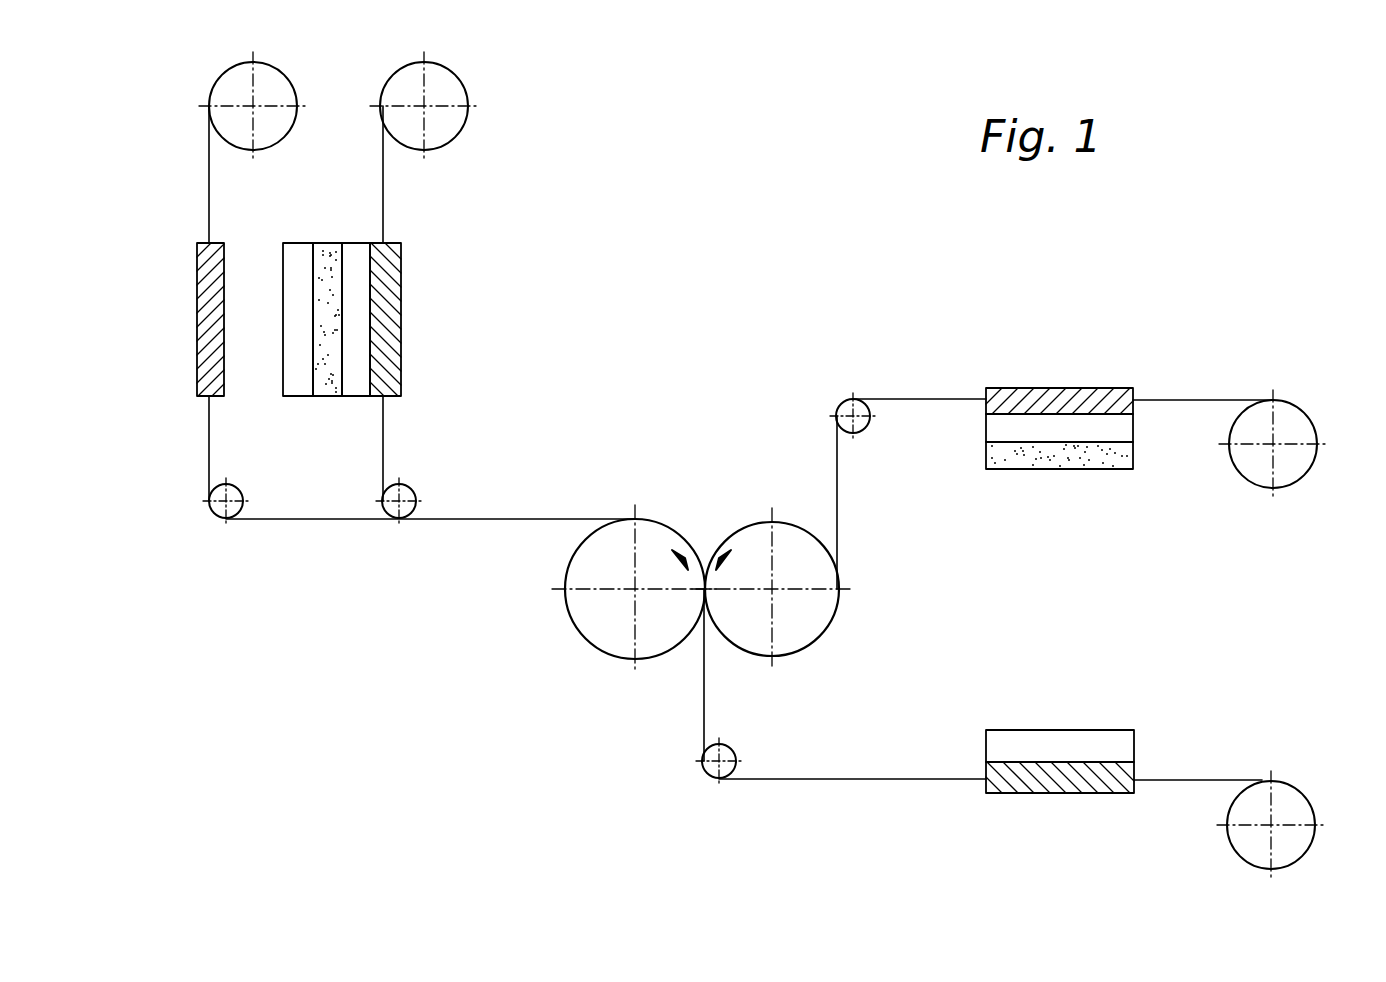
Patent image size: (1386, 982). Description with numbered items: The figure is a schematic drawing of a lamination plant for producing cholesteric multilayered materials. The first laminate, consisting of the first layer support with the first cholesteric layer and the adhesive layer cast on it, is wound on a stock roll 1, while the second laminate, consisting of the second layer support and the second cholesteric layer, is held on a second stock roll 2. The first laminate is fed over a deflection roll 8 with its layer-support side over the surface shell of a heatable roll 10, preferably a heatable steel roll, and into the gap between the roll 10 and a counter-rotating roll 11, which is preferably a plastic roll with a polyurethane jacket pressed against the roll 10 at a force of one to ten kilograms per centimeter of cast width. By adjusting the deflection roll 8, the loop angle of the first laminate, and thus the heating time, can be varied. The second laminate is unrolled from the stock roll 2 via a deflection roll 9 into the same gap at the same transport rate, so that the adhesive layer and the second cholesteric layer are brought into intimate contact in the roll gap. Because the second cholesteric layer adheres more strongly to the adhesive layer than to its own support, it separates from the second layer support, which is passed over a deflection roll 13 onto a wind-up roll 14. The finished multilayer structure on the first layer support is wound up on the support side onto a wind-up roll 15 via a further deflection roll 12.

The stock roll 1 is at (1285, 423).
The second stock roll 2 is at (1283, 805).
The deflection roll 8 is at (848, 396).
The deflection roll 9 is at (705, 772).
The heatable roll 10 is at (795, 618).
The roll 11 is at (647, 545).
The further deflection roll 12 is at (408, 512).
The deflection roll 13 is at (236, 512).
The wind-up roll 14 is at (232, 92).
The wind-up roll 15 is at (442, 90).